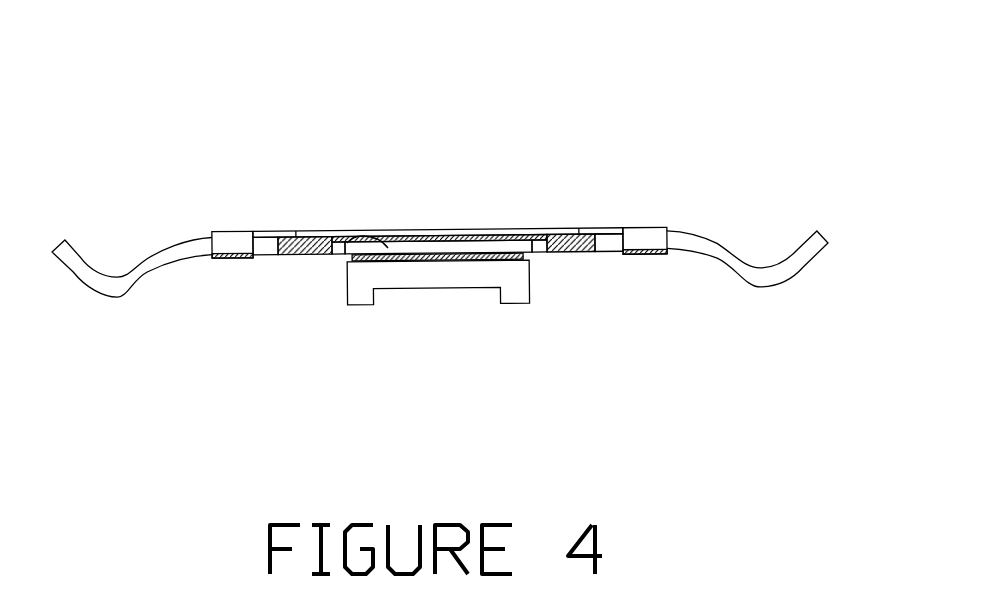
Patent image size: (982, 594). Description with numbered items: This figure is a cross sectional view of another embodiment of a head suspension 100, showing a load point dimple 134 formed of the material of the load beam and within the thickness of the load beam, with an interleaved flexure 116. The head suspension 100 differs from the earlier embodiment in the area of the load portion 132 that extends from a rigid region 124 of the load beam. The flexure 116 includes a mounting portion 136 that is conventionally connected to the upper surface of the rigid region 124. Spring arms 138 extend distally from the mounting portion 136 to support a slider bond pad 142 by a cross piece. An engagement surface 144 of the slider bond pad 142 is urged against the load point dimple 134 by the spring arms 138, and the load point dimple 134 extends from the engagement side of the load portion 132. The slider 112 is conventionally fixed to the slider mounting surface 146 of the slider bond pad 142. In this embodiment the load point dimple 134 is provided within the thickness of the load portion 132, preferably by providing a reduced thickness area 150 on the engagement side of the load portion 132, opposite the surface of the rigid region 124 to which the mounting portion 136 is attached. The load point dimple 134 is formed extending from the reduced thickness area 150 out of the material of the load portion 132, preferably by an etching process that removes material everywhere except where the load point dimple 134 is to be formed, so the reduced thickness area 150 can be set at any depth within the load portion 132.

The head suspension 100 is at (450, 193).
The slider 112 is at (488, 280).
The flexure 116 is at (339, 219).
The rigid region 124 is at (189, 234).
The load portion 132 is at (577, 252).
The load point dimple 134 is at (452, 252).
The mounting portion 136 is at (372, 229).
The spring arms 138 is at (230, 237).
The slider bond pad 142 is at (414, 262).
The engagement surface 144 is at (347, 243).
The slider mounting surface 146 is at (378, 262).
The reduced thickness area 150 is at (533, 248).